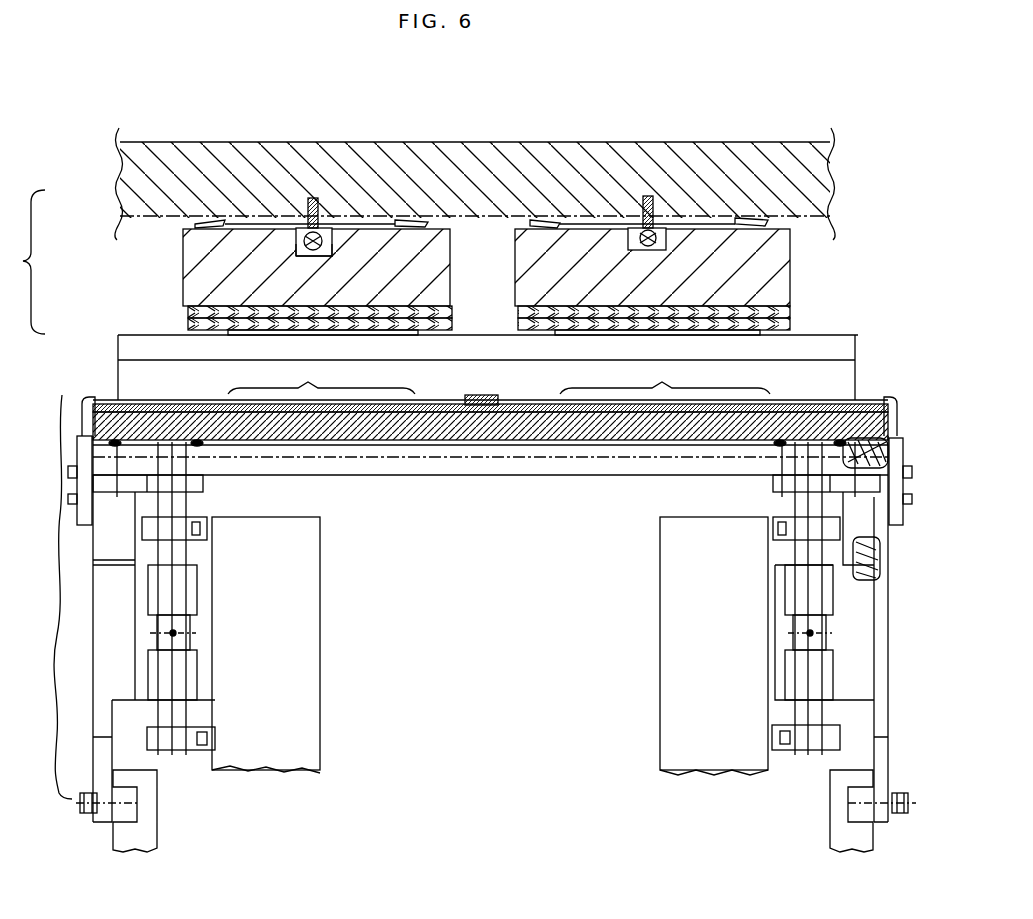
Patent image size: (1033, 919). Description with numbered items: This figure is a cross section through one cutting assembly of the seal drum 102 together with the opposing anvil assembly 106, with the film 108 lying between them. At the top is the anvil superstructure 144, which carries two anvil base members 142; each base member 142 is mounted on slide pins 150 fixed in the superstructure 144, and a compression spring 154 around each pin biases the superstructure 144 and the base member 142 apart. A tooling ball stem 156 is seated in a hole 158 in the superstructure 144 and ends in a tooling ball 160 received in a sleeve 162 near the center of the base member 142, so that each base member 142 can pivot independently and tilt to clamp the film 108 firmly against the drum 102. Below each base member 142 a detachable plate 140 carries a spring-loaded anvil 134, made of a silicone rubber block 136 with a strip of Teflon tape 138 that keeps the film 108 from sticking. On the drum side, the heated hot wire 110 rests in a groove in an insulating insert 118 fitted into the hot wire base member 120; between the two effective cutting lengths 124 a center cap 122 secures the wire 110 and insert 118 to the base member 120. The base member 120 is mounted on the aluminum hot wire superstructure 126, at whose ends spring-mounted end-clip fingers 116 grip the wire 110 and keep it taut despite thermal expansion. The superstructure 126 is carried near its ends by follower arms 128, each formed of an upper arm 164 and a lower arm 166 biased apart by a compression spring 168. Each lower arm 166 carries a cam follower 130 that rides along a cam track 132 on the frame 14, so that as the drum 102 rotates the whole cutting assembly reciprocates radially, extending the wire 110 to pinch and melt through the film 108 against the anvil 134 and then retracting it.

The machine frame 14 is at (47, 597).
The seal drum 102 is at (858, 346).
The anvil assembly 106 is at (406, 262).
The film 108 is at (790, 334).
The hot wire 110 is at (790, 400).
The end-clip finger 116 is at (82, 412).
The insert 118 is at (850, 440).
The hot wire base member 120 is at (618, 443).
The center cap 122 is at (498, 398).
The effective cutting length 124 is at (499, 379).
The hot wire superstructure 126 is at (495, 450).
The follower arm 128 is at (894, 596).
The cam follower 130 is at (848, 811).
The cam track 132 is at (860, 828).
The anvil 134 is at (505, 308).
The silicone rubber block 136 is at (190, 322).
The Teflon tape 138 is at (450, 328).
The plate 140 is at (192, 309).
The anvil base member 142 is at (183, 262).
The anvil superstructure 144 is at (392, 142).
The slide pin 150 is at (377, 222).
The compression spring 154 is at (778, 217).
The tooling ball stem 156 is at (306, 228).
The hole 158 is at (320, 228).
The tooling ball 160 is at (644, 238).
The sleeve 162 is at (334, 236).
The upper arm 164 is at (890, 513).
The lower arm 166 is at (889, 669).
The compression spring 168 is at (881, 561).